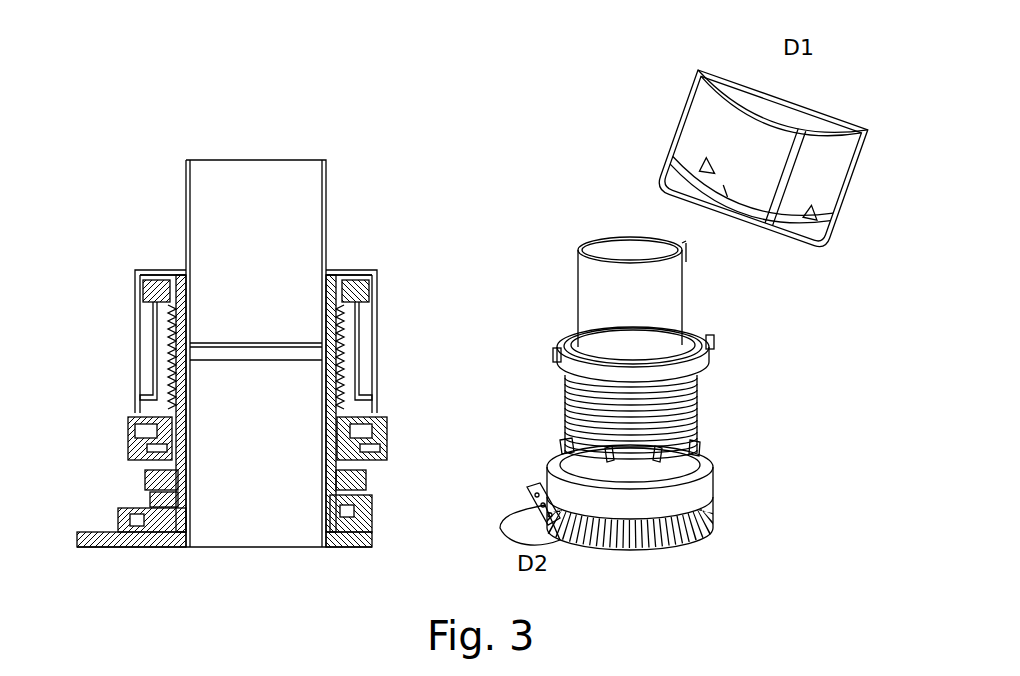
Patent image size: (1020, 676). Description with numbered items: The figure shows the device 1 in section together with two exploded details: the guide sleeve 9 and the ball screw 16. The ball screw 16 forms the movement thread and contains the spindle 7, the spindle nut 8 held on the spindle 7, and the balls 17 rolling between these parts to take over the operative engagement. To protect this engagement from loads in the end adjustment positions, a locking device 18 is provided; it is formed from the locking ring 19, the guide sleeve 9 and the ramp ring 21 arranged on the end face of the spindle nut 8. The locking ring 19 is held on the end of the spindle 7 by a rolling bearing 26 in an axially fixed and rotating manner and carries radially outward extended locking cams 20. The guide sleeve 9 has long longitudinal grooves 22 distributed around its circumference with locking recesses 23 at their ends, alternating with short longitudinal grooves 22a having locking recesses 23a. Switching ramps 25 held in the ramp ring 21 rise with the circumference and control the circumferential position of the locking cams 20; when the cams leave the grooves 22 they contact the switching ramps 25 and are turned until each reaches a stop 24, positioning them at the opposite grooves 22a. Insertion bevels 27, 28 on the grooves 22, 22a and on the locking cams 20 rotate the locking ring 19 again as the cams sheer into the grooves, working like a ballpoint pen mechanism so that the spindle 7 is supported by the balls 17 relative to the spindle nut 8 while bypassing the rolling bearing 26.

The device 1 is at (160, 125).
The spindle 7 is at (350, 388).
The spindle nut 8 is at (132, 450).
The guide sleeve 9 is at (135, 308).
The ball screw 16 is at (755, 505).
The balls 17 is at (345, 485).
The locking device 18 is at (118, 442).
The locking ring 19 is at (700, 355).
The locking cams 20 is at (378, 290).
The ramp ring 21 is at (380, 450).
The longitudinal grooves 22 is at (360, 348).
The short longitudinal grooves 22a is at (830, 224).
The locking recesses 23 is at (800, 122).
The locking recesses 23a is at (813, 222).
The stop 24 is at (620, 475).
The switching ramps 25 is at (720, 454).
The rolling bearing 26 is at (160, 269).
The insertion bevels 27 is at (700, 192).
The insertion bevels 28 is at (715, 342).